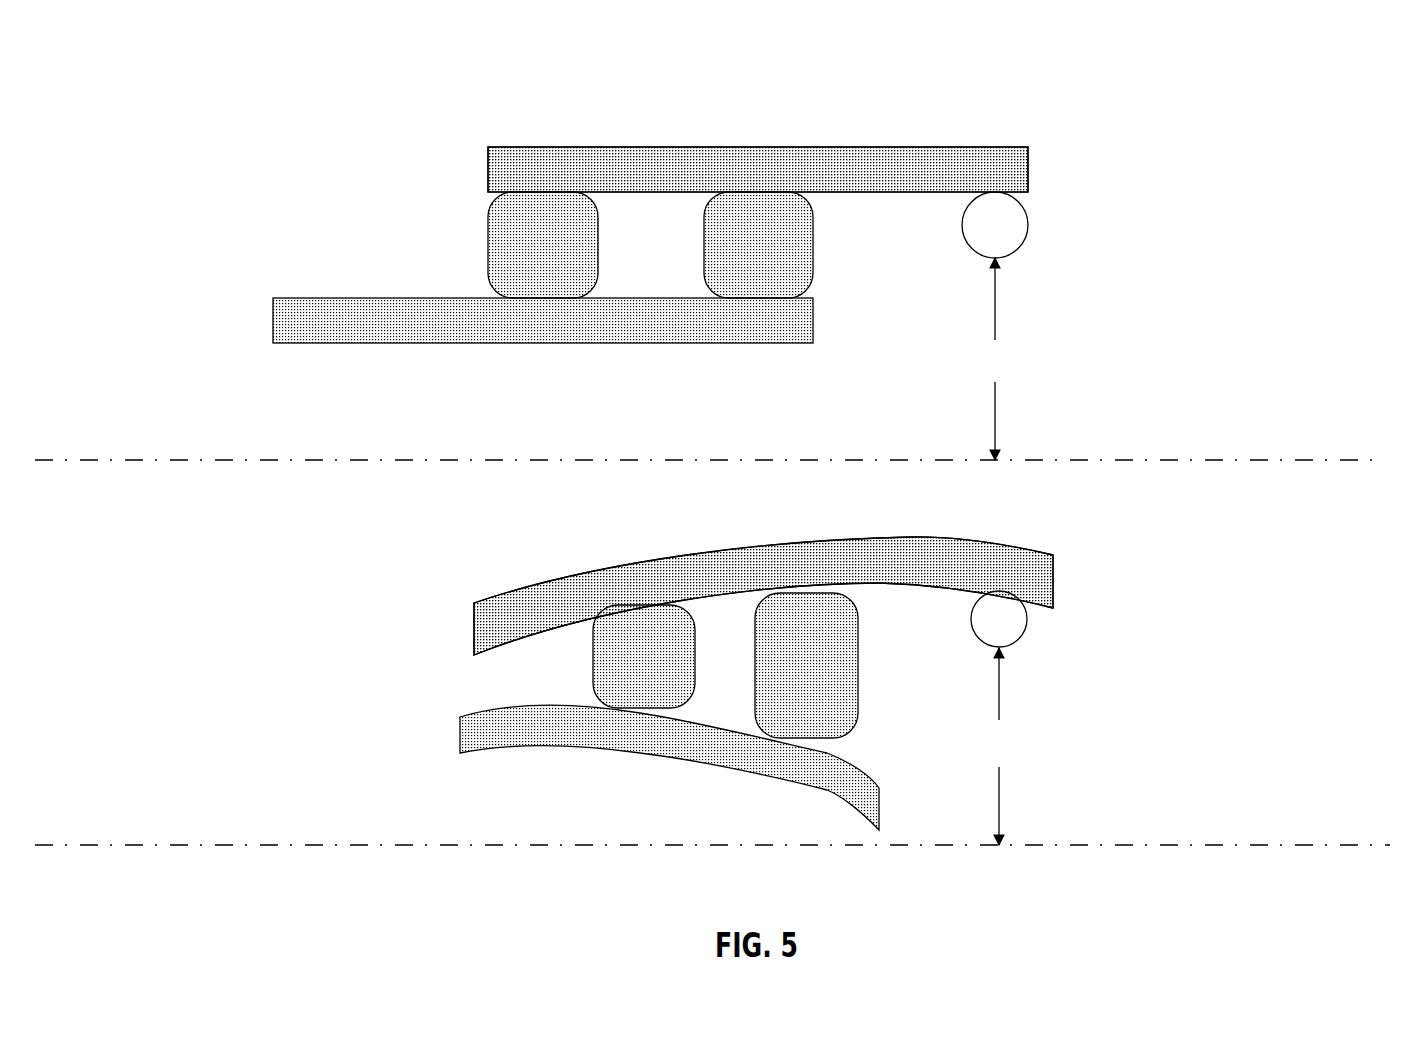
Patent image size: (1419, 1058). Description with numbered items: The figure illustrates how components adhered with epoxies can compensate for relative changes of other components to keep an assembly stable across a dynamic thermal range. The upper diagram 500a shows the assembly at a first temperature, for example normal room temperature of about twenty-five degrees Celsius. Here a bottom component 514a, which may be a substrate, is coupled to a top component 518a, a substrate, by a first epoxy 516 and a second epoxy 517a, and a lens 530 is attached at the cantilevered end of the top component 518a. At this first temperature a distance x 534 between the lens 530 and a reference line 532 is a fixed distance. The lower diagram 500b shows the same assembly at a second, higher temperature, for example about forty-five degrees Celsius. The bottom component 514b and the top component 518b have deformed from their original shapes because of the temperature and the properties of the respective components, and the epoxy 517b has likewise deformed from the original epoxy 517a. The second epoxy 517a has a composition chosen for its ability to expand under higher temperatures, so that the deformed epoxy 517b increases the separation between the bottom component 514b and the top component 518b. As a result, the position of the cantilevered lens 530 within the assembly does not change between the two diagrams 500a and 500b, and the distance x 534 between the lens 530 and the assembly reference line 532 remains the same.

The diagram at first temperature 500a is at (1128, 112).
The diagram at second temperature 500b is at (1128, 575).
The top component 518a is at (1028, 156).
The top component 518b is at (983, 555).
The first epoxy 516 is at (488, 241).
The second epoxy 517a is at (704, 250).
The epoxy 517b is at (755, 685).
The bottom component 514a is at (312, 321).
The bottom component 514b is at (765, 773).
The lens 530 is at (1028, 224).
The distance x 534 is at (1017, 357).
The reference line 532 is at (1318, 460).